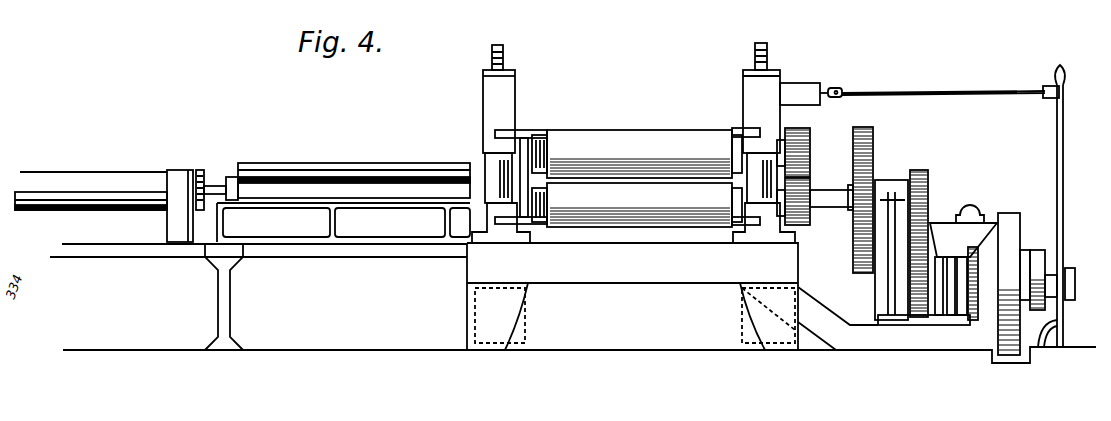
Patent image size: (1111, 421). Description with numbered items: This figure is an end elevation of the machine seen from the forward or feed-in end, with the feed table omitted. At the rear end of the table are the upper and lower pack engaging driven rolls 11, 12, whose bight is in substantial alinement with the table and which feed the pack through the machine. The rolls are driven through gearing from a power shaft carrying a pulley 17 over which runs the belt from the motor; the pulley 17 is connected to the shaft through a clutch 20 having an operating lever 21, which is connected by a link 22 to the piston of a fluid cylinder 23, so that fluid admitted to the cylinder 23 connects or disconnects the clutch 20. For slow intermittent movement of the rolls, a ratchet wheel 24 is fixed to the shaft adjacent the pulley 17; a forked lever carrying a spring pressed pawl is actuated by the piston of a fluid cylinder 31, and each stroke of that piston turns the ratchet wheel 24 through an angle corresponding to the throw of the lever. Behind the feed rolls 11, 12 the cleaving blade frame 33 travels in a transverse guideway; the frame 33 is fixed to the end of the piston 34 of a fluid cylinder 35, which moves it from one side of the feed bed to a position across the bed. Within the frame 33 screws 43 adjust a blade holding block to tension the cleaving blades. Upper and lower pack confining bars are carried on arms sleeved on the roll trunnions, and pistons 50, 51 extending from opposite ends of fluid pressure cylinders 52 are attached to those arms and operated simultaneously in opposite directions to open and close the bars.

The upper pack engaging driven roll 11 is at (625, 136).
The lower pack engaging driven roll 12 is at (612, 213).
The pulley 17 is at (1010, 226).
The clutch 20 is at (1040, 247).
The operating lever 21 is at (1064, 183).
The link 22 is at (937, 76).
The fluid cylinder 23 is at (800, 83).
The ratchet wheel 24 is at (978, 316).
The fluid cylinder 31 is at (978, 214).
The cleaving blade frame 33 is at (283, 163).
The piston 34 is at (214, 176).
The fluid cylinder 35 is at (117, 178).
The screws 43 is at (230, 176).
The piston 50 is at (772, 122).
The piston 51 is at (760, 230).
The fluid pressure cylinders 52 is at (766, 213).